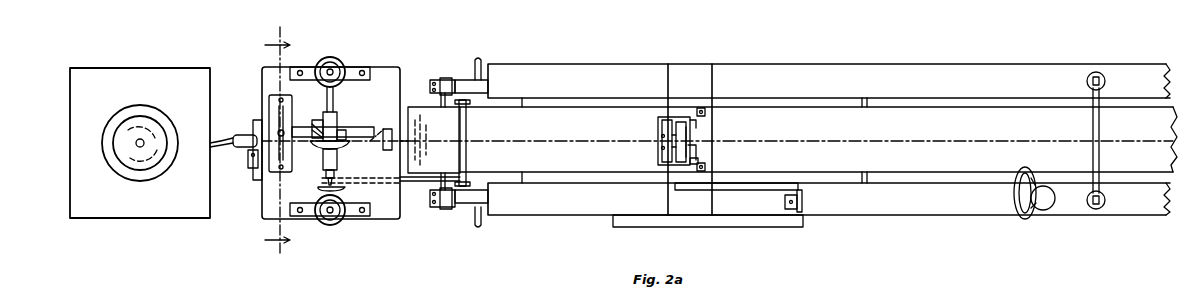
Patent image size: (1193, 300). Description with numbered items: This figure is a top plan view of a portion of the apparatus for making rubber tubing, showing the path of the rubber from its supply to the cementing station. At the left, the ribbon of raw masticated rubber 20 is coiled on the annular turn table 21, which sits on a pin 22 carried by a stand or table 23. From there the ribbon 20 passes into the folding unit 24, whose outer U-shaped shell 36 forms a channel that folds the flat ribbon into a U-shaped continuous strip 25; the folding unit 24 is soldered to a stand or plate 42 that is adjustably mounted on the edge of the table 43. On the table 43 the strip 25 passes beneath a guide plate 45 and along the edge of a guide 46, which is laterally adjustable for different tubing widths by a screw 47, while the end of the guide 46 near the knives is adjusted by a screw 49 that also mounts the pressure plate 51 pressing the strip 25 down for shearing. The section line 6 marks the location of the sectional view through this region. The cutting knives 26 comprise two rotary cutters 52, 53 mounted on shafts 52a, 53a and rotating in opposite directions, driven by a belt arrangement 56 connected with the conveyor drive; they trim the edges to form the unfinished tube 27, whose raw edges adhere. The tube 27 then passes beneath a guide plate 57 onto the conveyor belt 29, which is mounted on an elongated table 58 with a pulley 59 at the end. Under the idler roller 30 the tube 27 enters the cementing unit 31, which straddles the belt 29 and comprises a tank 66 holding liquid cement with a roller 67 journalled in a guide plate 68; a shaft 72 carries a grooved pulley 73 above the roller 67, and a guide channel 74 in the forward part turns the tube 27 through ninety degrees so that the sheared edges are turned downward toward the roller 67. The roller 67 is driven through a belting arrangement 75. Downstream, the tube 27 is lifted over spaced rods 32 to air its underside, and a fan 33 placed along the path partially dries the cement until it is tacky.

The section line 6 is at (277, 138).
The ribbon of raw masticated rubber 20 is at (220, 141).
The turn table 21 is at (112, 139).
The pin 22 is at (138, 141).
The stand or table 23 is at (125, 205).
The folding unit 24 is at (250, 146).
The U-shaped continuous strip of rubber 25 is at (322, 181).
The cutting knives 26 is at (345, 62).
The unfinished tube 27 is at (386, 129).
The conveyor belt 29 is at (580, 95).
The idler roller 30 is at (460, 128).
The cementing unit 31 is at (690, 115).
The spaced rods 32 is at (1094, 120).
The fan 33 is at (1044, 210).
The outer U-shaped shell 36 is at (240, 145).
The stand or plate 42 is at (252, 160).
The table 43 is at (400, 216).
The guide plate 45 is at (275, 100).
The guide 46 is at (304, 127).
The screw 47 is at (279, 130).
The screw 49 is at (318, 120).
The pressure plate 51 is at (324, 147).
The rotary cutter 52 is at (343, 147).
The shaft 52a is at (334, 104).
The rotary cutter 53 is at (343, 130).
The shaft 53a is at (346, 189).
The belt arrangement 56 is at (417, 183).
The guide plate 57 is at (387, 150).
The elongated table 58 is at (553, 216).
The pulley 59 is at (410, 107).
The tank 66 is at (697, 124).
The roller 67 is at (690, 150).
The guide plate 68 is at (705, 111).
The shaft 72 is at (692, 158).
The grooved pulley 73 is at (688, 135).
The guide channel 74 is at (658, 131).
The belting arrangement 75 is at (752, 190).